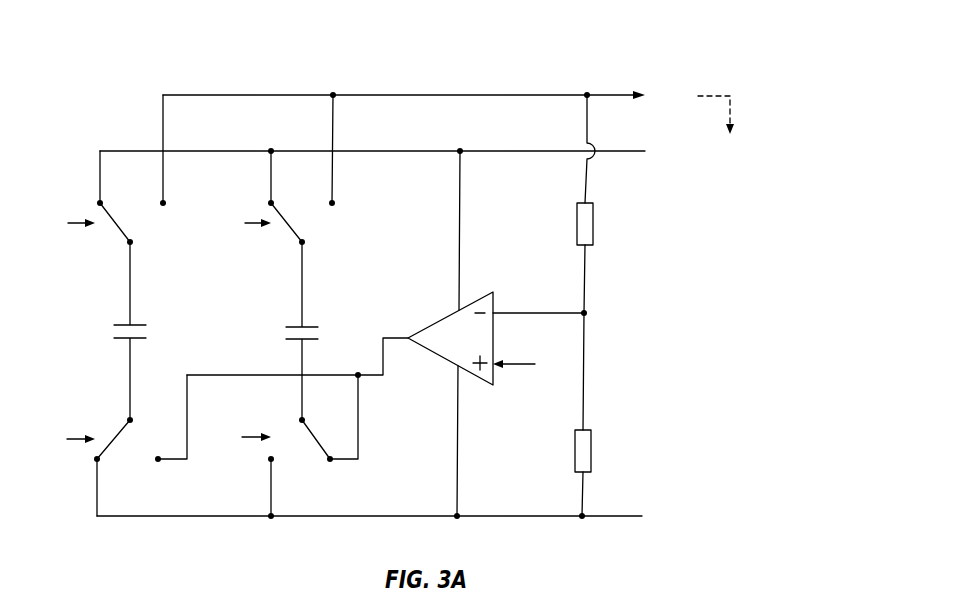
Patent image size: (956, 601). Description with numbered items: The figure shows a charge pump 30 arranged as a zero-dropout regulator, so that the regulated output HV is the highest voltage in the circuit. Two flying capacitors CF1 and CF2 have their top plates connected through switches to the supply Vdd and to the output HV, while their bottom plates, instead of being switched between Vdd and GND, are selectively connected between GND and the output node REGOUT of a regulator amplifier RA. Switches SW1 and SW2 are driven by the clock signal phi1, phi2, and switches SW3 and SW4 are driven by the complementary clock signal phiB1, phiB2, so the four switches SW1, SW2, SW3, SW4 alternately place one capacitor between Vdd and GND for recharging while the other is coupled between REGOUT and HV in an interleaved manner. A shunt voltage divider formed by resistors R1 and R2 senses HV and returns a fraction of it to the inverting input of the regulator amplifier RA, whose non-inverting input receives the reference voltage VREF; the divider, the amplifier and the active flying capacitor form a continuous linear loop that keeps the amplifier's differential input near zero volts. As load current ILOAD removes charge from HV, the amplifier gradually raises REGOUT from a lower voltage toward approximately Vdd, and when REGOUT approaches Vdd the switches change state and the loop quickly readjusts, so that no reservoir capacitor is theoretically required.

The charge pump 30 is at (424, 272).
The switch SW1 is at (140, 228).
The switch SW2 is at (140, 445).
The switch SW3 is at (326, 222).
The switch SW4 is at (313, 445).
The flying capacitor CF1 is at (105, 331).
The flying capacitor CF2 is at (276, 331).
The resistor R1 is at (606, 258).
The resistor R2 is at (603, 414).
The regulator amplifier RA is at (474, 300).
The output node of regulator amplifier REGOUT is at (396, 326).
The regulated output node HV is at (424, 95).
The supply voltage Vdd is at (397, 149).
The ground GND is at (393, 522).
The reference voltage VREF is at (527, 349).
The load current ILOAD is at (748, 122).
The clock signal Φ phi1 is at (72, 224).
The clock signal Φ phi2 is at (72, 439).
The clock signal ΦB phiB1 is at (243, 224).
The clock signal ΦB phiB2 is at (240, 437).